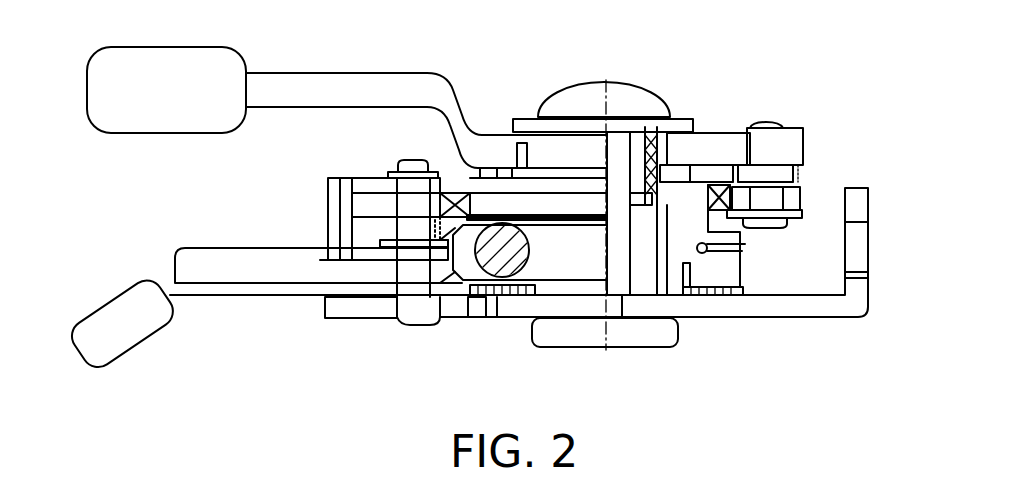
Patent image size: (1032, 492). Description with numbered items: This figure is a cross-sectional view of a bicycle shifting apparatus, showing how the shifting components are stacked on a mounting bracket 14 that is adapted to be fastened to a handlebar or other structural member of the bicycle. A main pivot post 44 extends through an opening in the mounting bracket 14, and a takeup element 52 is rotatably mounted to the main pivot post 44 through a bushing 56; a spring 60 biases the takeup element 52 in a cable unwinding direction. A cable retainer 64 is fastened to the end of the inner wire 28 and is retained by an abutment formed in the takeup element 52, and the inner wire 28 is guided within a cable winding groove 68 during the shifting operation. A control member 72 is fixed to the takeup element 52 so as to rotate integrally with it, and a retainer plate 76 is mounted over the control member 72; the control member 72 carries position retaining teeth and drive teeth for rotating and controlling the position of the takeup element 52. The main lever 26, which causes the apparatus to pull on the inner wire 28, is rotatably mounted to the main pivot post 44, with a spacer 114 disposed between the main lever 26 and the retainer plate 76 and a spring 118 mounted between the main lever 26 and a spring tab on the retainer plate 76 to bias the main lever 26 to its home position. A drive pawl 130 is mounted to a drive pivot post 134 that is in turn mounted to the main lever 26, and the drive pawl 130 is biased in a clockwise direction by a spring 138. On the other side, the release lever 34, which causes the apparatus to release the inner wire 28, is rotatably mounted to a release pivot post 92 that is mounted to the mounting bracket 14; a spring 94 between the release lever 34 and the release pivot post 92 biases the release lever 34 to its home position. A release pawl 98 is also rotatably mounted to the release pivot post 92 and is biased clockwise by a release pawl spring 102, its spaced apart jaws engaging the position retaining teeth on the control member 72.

The mounting bracket 14 is at (822, 317).
The main lever 26 is at (292, 72).
The inner wire 28 is at (710, 252).
The release lever 34 is at (213, 245).
The main pivot post 44 is at (555, 348).
The takeup element 52 is at (576, 261).
The bushing 56 is at (662, 287).
The spring 60 is at (478, 300).
The cable retainer 64 is at (512, 292).
The cable winding groove 68 is at (745, 247).
The control member 72 is at (506, 203).
The retainer plate 76 is at (500, 200).
The release pivot post 92 is at (410, 312).
The spring 94 is at (443, 305).
The release pawl 98 is at (370, 203).
The release pawl spring 102 is at (463, 203).
The spacer 114 is at (668, 165).
The spring 118 is at (708, 165).
The drive pawl 130 is at (804, 197).
The drive pivot post 134 is at (765, 123).
The spring 138 is at (806, 172).